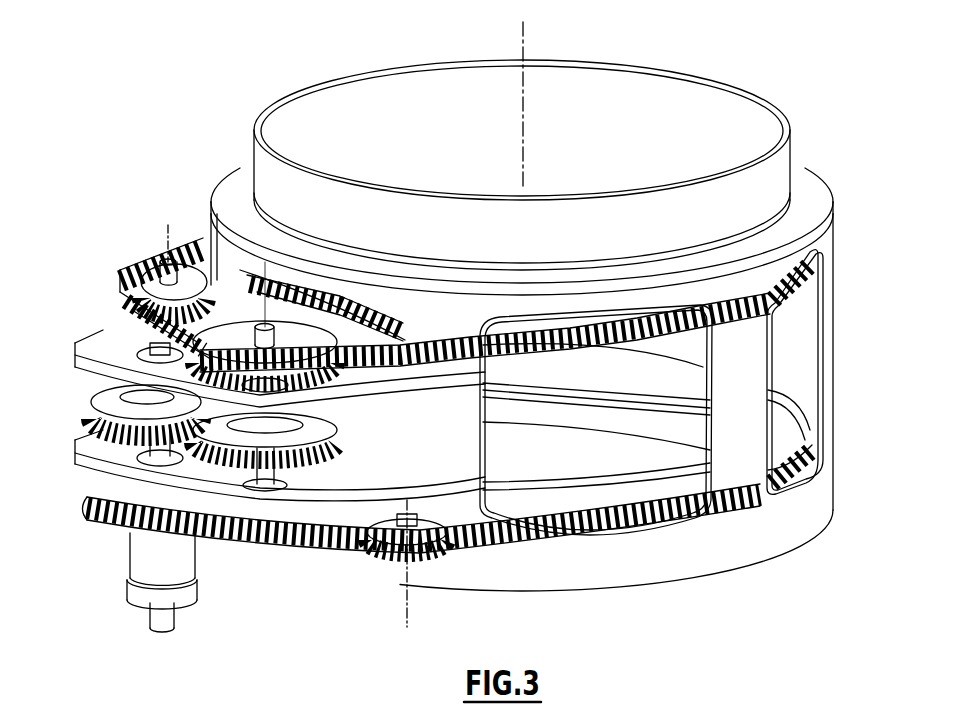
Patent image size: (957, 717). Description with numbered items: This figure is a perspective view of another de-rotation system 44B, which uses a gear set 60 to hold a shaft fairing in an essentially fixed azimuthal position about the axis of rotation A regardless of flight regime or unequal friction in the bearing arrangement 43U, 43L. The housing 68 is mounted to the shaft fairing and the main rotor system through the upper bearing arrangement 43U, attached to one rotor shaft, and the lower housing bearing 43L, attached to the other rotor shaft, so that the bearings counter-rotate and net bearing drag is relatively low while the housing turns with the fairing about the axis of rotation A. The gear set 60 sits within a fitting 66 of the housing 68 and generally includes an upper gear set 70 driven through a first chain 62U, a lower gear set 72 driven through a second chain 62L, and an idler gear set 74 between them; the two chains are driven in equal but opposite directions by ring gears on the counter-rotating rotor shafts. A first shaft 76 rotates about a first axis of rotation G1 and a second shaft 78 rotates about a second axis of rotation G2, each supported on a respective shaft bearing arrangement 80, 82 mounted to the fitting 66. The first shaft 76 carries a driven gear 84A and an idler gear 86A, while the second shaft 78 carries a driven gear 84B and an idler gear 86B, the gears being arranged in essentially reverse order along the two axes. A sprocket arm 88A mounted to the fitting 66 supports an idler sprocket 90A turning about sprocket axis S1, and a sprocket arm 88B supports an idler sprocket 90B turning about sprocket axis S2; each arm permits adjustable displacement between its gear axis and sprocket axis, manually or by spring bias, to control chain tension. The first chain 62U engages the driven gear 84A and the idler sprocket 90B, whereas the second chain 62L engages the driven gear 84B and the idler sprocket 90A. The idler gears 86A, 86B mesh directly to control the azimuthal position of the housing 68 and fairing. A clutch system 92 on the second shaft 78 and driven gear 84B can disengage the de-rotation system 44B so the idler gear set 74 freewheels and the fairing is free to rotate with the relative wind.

The de-rotation system 44B is at (690, 45).
The axis of rotation A is at (527, 50).
The upper bearing arrangement 43U is at (812, 170).
The lower housing bearing 43L is at (673, 422).
The housing 68 is at (743, 530).
The sprocket arm 88A is at (463, 540).
The sprocket arm 88B is at (117, 343).
The upper gear set 70 is at (88, 309).
The gear set 60 is at (76, 514).
The first chain 62U is at (198, 242).
The second chain 62L is at (317, 543).
The idler sprocket 90B is at (223, 317).
The idler sprocket 90A is at (385, 527).
The first axis of rotation G1 is at (266, 322).
The second axis of rotation G2 is at (166, 218).
The sprocket axis S1 is at (408, 610).
The sprocket axis S2 is at (166, 247).
The driven gear 84A is at (297, 345).
The driven gear 84B is at (150, 503).
The idler gear set 74 is at (80, 417).
The idler gear 86A is at (317, 430).
The idler gear 86B is at (105, 430).
The second shaft 78 is at (163, 442).
The first shaft 76 is at (275, 468).
The shaft bearing arrangement 80 is at (250, 487).
The shaft bearing arrangement 82 is at (150, 463).
The fitting 66 is at (290, 512).
The lower gear set 72 is at (446, 566).
The clutch system 92 is at (143, 597).